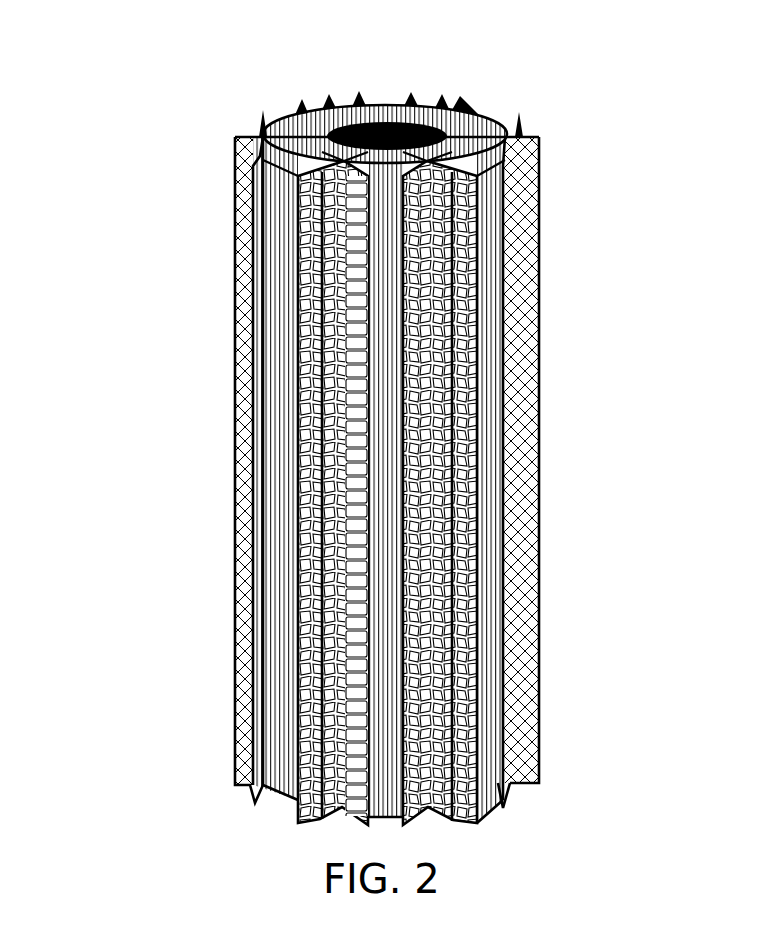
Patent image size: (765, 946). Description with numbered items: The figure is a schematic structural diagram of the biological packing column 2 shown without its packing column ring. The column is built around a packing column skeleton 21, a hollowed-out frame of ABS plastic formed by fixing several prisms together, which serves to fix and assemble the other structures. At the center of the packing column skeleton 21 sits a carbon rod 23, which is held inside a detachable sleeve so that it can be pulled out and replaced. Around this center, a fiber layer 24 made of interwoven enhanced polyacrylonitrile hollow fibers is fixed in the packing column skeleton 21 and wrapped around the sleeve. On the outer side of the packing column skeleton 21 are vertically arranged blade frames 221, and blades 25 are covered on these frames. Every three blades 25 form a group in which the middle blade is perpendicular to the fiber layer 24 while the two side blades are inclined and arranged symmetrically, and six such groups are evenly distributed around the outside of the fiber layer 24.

The biological packing column 2 is at (372, 418).
The packing column skeleton 21 is at (292, 117).
The carbon rod 23 is at (393, 110).
The fiber layer 24 is at (243, 396).
The blade 25 is at (543, 252).
The blade frame 221 is at (543, 415).